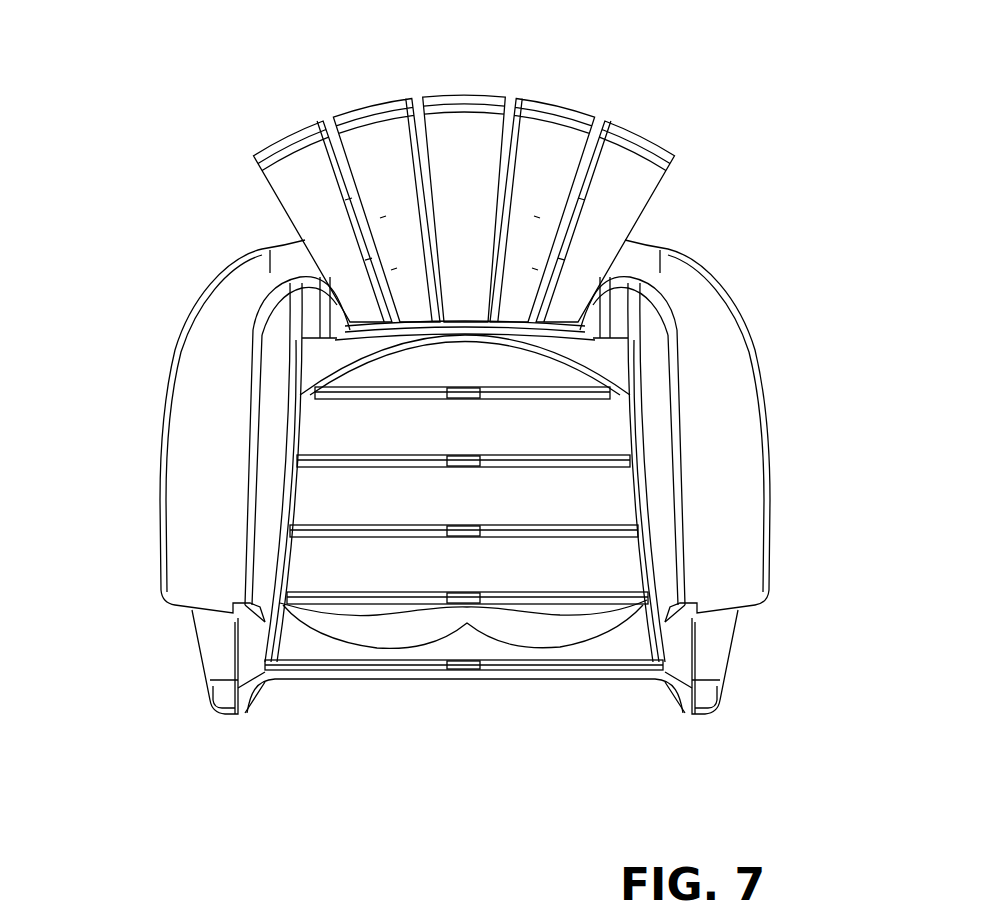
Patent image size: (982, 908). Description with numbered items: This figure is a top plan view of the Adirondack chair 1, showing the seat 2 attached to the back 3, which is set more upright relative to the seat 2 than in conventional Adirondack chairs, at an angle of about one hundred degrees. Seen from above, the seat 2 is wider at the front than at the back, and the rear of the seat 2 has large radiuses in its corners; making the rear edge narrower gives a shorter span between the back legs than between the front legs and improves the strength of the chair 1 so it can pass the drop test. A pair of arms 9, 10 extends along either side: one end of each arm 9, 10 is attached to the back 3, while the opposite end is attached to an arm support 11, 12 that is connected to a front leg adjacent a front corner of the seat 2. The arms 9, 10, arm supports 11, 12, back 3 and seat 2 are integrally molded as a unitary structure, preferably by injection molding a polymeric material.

The Adirondack chair 1 is at (255, 88).
The seat 2 is at (465, 642).
The back 3 is at (500, 99).
The arm 9 is at (192, 402).
The arm 10 is at (720, 333).
The arm support 11 is at (213, 656).
The arm support 12 is at (707, 662).